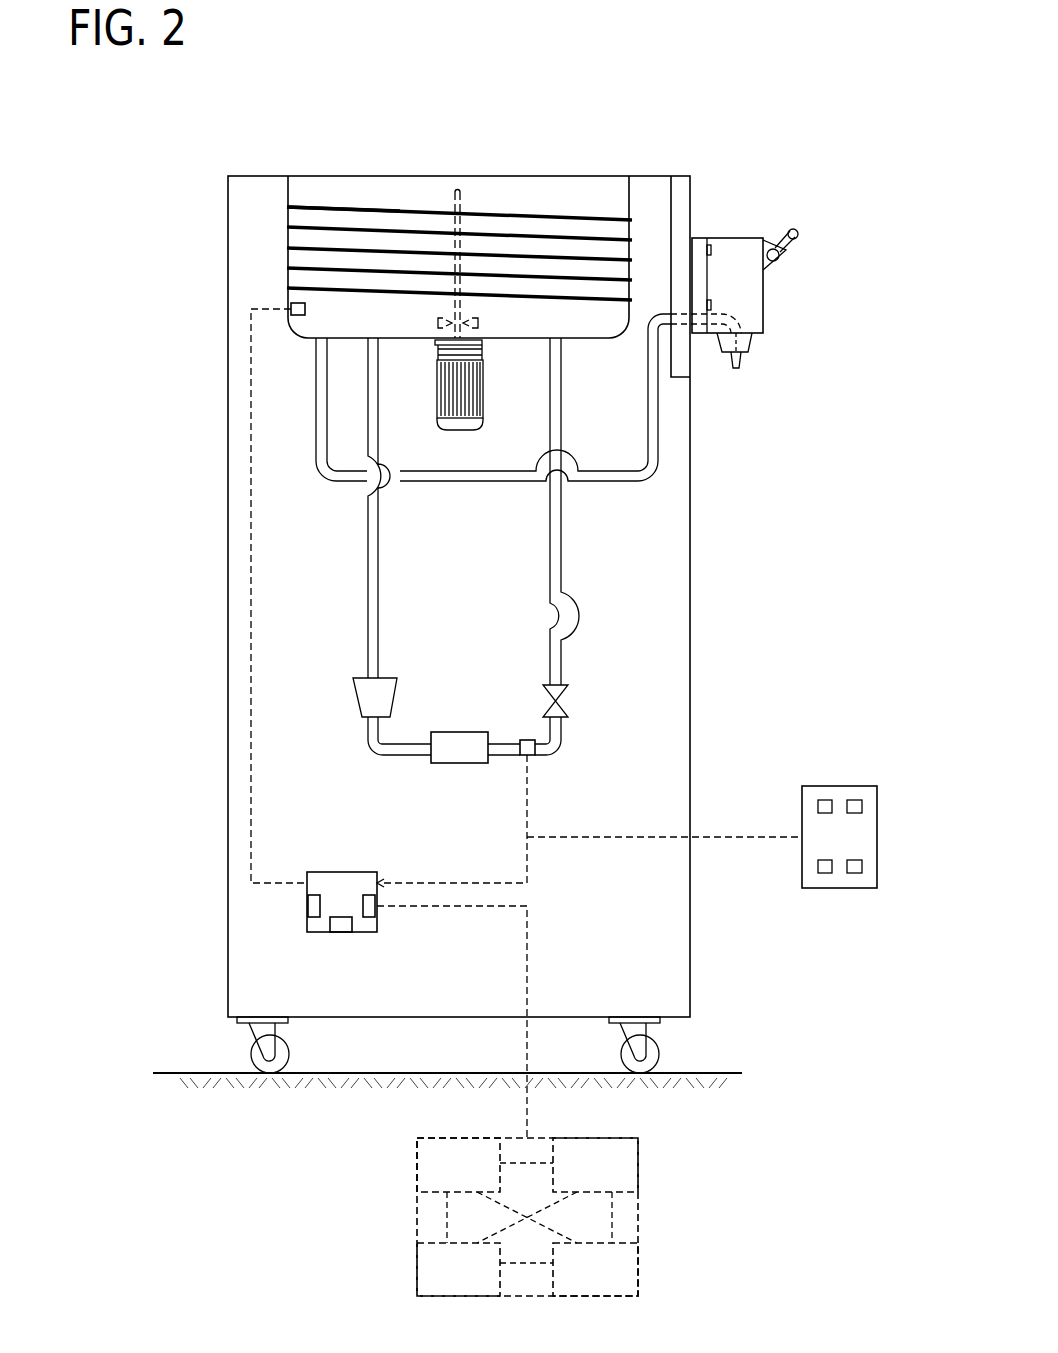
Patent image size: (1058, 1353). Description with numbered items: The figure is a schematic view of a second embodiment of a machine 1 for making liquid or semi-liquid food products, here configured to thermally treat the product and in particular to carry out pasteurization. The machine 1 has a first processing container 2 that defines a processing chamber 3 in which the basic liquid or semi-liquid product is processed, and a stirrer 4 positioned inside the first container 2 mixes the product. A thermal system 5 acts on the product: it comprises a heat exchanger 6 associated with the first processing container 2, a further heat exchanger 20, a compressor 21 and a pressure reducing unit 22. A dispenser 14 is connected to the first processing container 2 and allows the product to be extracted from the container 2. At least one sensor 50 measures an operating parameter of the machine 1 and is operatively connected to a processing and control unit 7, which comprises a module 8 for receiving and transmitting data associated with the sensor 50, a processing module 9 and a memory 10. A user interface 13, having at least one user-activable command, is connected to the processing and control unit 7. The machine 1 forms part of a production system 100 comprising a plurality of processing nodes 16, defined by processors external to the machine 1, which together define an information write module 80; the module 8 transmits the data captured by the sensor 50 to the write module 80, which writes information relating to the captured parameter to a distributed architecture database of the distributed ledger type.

The machine 1 is at (731, 130).
The first processing container 2 is at (527, 160).
The processing chamber 3 is at (335, 163).
The stirrer 4 is at (426, 303).
The thermal system 5 is at (352, 596).
The heat exchanger 6 is at (310, 195).
The processing and control unit 7 is at (342, 885).
The module for receiving and transmitting data 8 is at (390, 913).
The processing module 9 is at (335, 944).
The memory 10 is at (292, 919).
The user interface 13 is at (829, 774).
The dispenser 14 is at (791, 300).
The processing nodes 16 is at (582, 1279).
The further heat exchanger 20 is at (457, 720).
The compressor 21 is at (343, 711).
The pressure reducing unit 22 is at (590, 695).
The sensor 50 is at (278, 301).
The write module 80 is at (467, 1176).
The production system 100 is at (610, 1217).